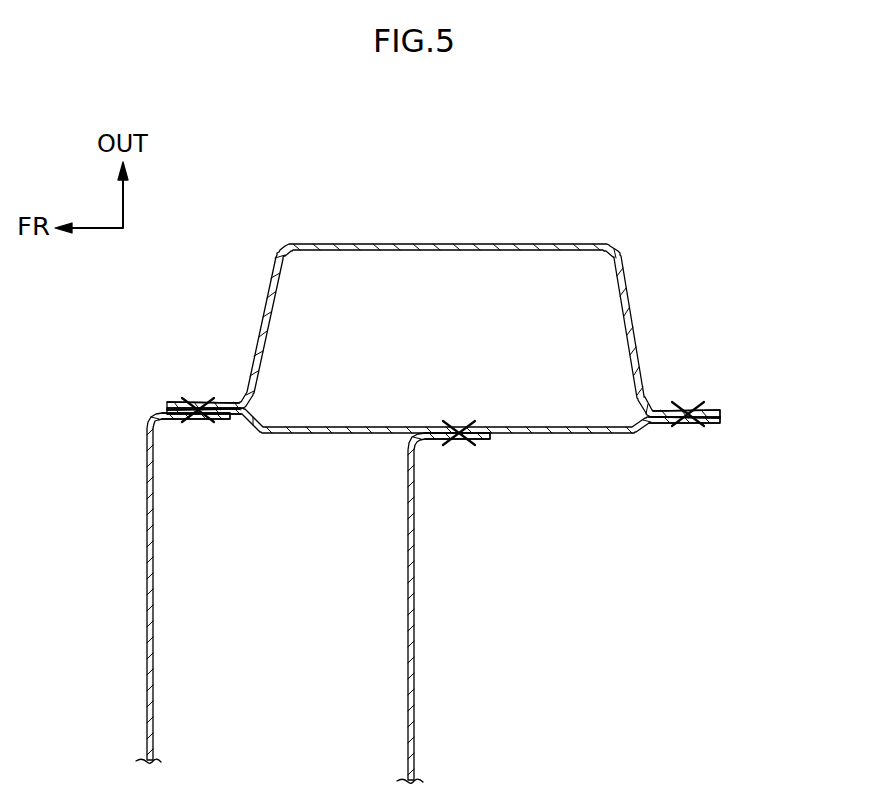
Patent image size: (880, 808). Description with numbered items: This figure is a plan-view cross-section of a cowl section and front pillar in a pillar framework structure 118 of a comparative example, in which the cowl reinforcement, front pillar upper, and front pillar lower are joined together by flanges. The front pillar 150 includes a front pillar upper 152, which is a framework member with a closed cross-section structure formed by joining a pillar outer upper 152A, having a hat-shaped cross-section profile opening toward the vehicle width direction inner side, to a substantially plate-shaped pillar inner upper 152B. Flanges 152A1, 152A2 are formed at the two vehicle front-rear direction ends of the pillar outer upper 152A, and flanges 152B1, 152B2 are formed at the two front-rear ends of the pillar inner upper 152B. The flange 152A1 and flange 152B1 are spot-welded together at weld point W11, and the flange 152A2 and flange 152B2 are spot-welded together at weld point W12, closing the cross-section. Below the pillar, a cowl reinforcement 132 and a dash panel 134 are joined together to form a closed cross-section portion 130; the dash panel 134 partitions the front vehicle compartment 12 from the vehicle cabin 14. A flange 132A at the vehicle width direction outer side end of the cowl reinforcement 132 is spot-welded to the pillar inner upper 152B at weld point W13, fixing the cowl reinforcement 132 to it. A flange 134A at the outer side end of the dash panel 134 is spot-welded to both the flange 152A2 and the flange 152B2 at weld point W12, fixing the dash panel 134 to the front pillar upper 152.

The pillar framework structure 118 is at (731, 171).
The front pillar 150 is at (657, 207).
The front pillar upper 152 is at (543, 185).
The pillar outer upper 152A is at (402, 242).
The pillar inner upper 152B is at (527, 423).
The flange 152A1 is at (710, 412).
The flange 152A2 is at (167, 403).
The flange 152B1 is at (705, 423).
The flange 152B2 is at (165, 412).
The weld point W11 is at (688, 404).
The weld point W12 is at (200, 398).
The weld point W13 is at (459, 446).
The dash panel 134 is at (147, 713).
The flange 134A is at (222, 421).
The cowl reinforcement 132 is at (415, 745).
The flange 132A is at (488, 441).
The front vehicle compartment 12 is at (85, 668).
The closed cross-section portion 130 is at (299, 668).
The vehicle cabin 14 is at (547, 668).